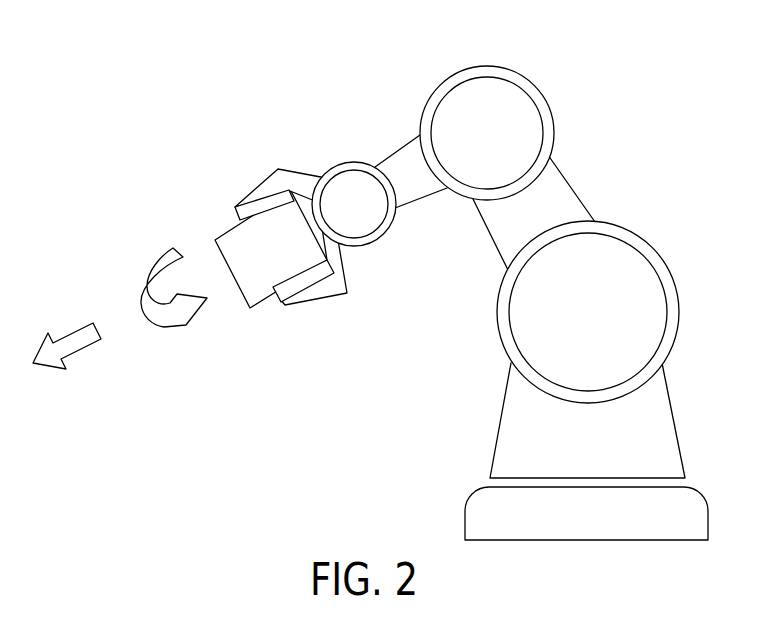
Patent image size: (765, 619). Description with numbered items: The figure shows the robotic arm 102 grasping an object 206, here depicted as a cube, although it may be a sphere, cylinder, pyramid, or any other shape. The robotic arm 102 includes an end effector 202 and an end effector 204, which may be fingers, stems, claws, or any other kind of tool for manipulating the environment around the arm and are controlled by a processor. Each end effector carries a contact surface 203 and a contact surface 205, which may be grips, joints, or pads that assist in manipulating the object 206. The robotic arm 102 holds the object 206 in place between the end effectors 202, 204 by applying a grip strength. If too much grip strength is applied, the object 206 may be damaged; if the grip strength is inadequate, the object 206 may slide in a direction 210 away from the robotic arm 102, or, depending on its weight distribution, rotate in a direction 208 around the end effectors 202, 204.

The robotic arm 102 is at (476, 88).
The end effector 202 is at (293, 173).
The contact surface 203 is at (237, 221).
The end effector 204 is at (328, 290).
The contact surface 205 is at (280, 292).
The object 206 is at (288, 266).
The direction 208 is at (150, 277).
The direction 210 is at (80, 327).